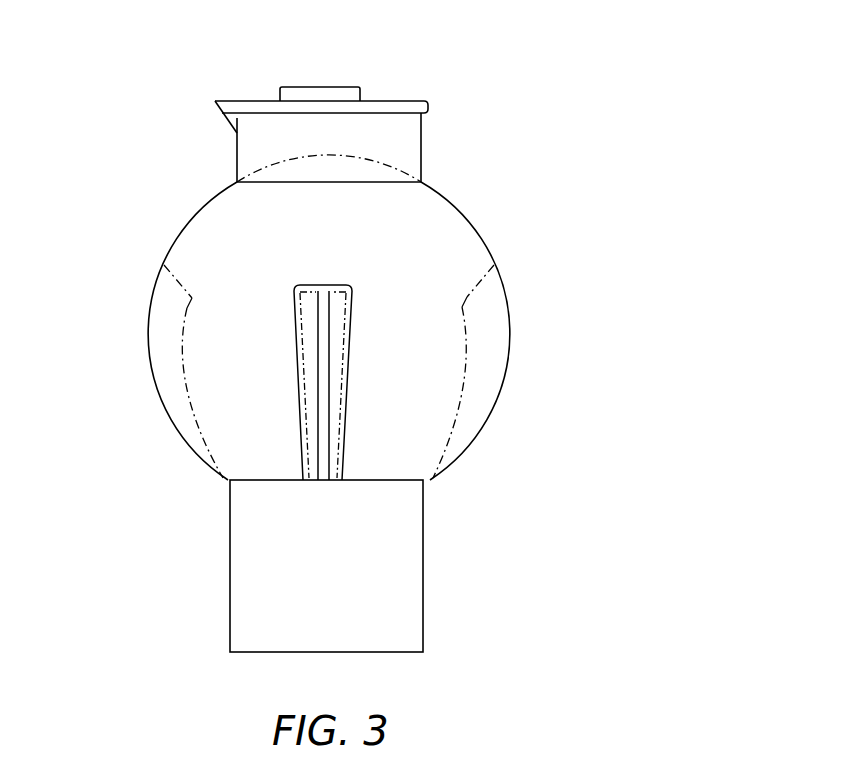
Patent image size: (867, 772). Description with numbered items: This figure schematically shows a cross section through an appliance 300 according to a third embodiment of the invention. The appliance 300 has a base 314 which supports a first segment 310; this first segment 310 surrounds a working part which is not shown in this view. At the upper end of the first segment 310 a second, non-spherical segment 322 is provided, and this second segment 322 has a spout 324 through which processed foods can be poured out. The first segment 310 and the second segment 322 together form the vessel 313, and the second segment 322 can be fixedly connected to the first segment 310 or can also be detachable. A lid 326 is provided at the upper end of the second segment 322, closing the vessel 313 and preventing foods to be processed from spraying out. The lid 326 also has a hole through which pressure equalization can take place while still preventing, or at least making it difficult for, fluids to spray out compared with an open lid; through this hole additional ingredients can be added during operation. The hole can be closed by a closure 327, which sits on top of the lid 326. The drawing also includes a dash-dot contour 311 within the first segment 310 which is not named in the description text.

The appliance 300 is at (598, 247).
The first segment 310 is at (476, 228).
The inner surface of globe 311 is at (482, 390).
The vessel 313 is at (110, 346).
The base 314 is at (423, 555).
The second segment 322 is at (423, 148).
The spout 324 is at (234, 128).
The lid 326 is at (380, 85).
The closure 327 is at (300, 86).